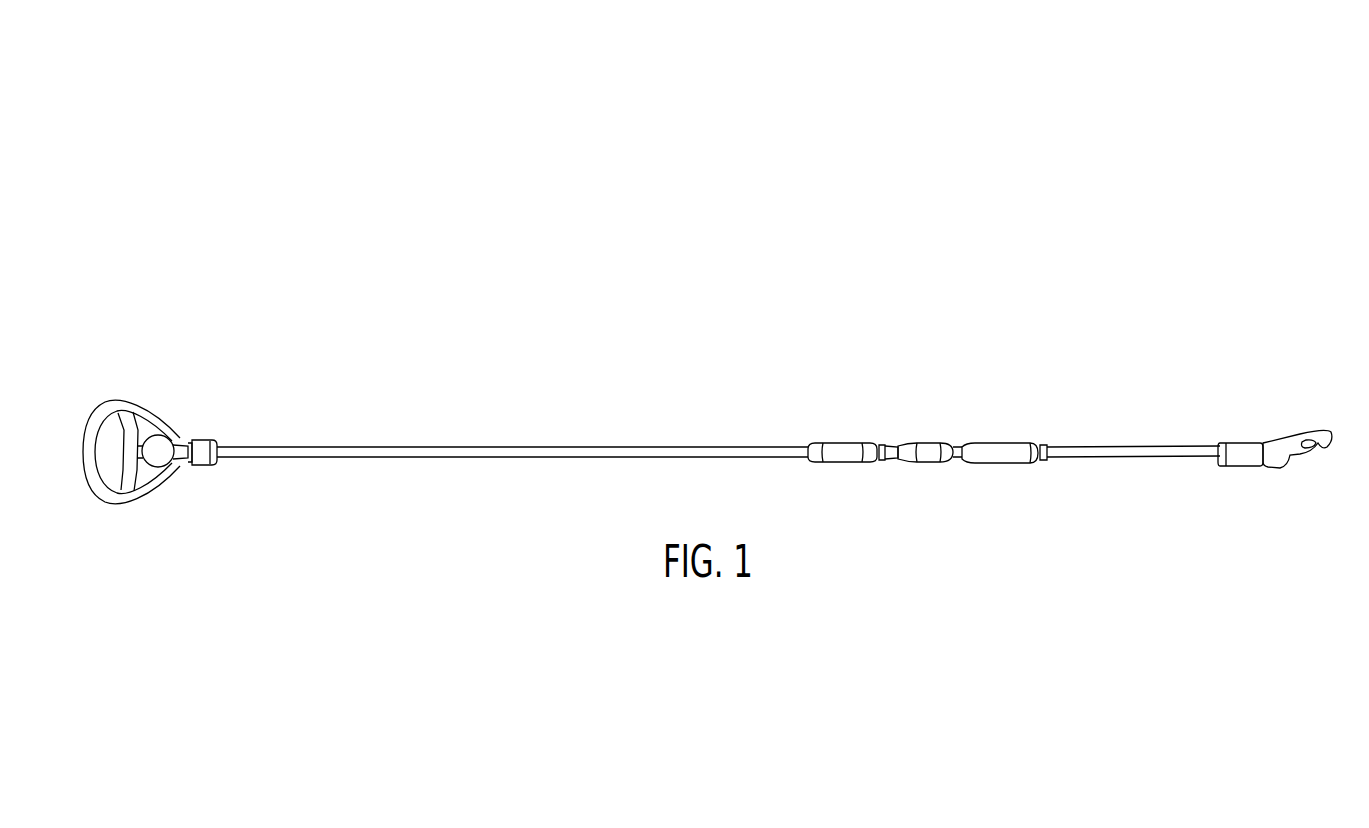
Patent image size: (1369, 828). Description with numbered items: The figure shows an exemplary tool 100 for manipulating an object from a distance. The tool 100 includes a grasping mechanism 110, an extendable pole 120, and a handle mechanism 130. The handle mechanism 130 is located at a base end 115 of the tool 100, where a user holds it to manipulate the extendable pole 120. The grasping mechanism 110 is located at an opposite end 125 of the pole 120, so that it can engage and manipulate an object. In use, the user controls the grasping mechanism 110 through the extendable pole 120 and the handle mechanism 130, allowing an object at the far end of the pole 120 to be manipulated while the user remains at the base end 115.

The tool 100 is at (1082, 160).
The grasping mechanism 110 is at (1294, 366).
The base end 115 is at (1261, 522).
The extendable pole 120 is at (290, 385).
The opposite end 125 is at (216, 517).
The handle mechanism 130 is at (210, 336).